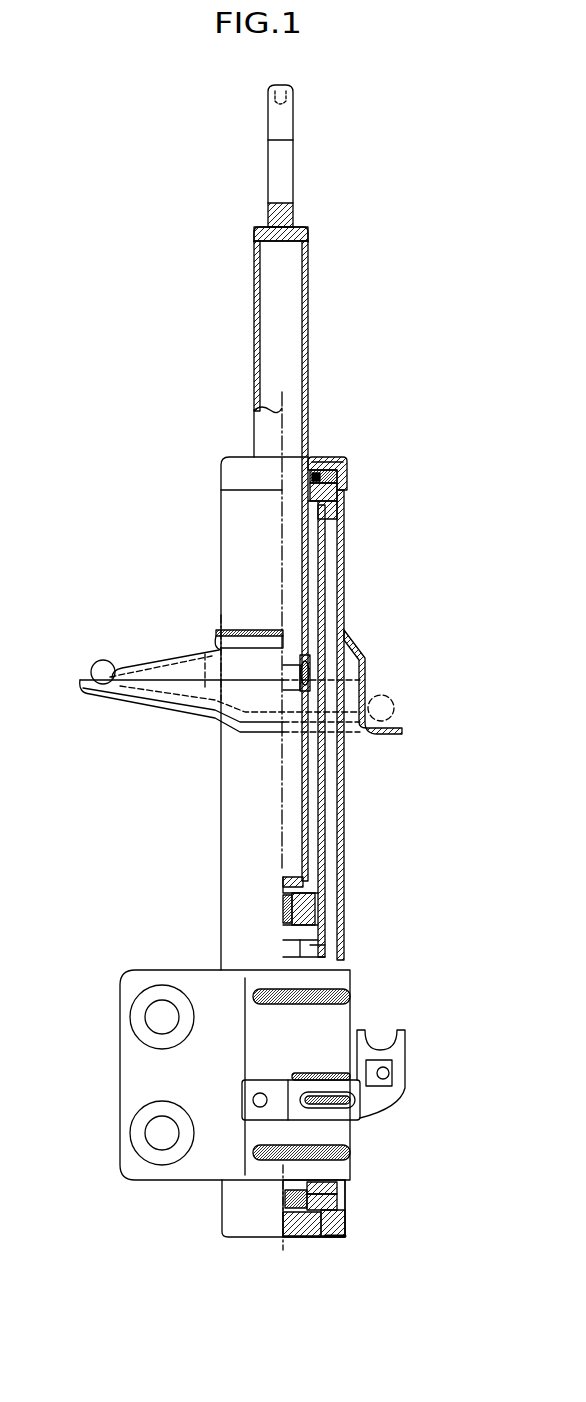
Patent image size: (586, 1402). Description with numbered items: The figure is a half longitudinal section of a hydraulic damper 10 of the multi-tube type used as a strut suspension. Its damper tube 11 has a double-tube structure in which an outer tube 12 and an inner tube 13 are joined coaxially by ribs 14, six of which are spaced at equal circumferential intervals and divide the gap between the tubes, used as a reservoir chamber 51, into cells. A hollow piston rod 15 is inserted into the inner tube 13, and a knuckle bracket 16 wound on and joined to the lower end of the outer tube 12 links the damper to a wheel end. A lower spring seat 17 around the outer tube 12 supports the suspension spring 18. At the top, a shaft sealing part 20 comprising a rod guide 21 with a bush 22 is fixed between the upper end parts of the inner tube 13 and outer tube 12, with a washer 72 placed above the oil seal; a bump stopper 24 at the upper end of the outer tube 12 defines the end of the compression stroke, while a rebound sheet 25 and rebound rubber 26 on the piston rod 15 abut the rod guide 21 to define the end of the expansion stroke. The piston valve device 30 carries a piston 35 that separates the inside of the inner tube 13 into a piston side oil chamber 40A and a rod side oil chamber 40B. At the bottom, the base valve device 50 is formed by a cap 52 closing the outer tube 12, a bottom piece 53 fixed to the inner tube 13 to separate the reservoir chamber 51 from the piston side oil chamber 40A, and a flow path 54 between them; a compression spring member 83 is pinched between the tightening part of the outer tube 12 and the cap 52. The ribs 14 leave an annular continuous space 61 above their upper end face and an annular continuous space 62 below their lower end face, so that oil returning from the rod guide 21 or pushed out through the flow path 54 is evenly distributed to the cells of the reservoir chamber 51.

The hydraulic damper 10 is at (130, 176).
The damper tube 11 is at (349, 548).
The outer tube 12 is at (345, 586).
The inner tube 13 is at (347, 640).
The ribs 14 is at (326, 606).
The piston rod 15 is at (310, 292).
The knuckle bracket 16 is at (180, 972).
The lower spring seat 17 is at (96, 700).
The suspension spring 18 is at (100, 660).
The shaft sealing part 20 is at (340, 482).
The rod guide 21 is at (342, 492).
The bush 22 is at (312, 478).
The bump stopper 24 is at (347, 460).
The rebound sheet 25 is at (312, 682).
The rebound rubber 26 is at (312, 662).
The piston valve device 30 is at (283, 905).
The piston 35 is at (323, 926).
The piston side oil chamber 40A is at (335, 956).
The rod side oil chamber 40B is at (312, 788).
The base valve device 50 is at (276, 1203).
The reservoir chamber 51 is at (331, 830).
The cap 52 is at (285, 1225).
The bottom piece 53 is at (338, 1197).
The flow path 54 is at (316, 1236).
The annular continuous space 61 is at (337, 516).
The annular continuous space 62 is at (340, 1185).
The washer 72 is at (333, 459).
The compression spring member 83 is at (332, 1238).